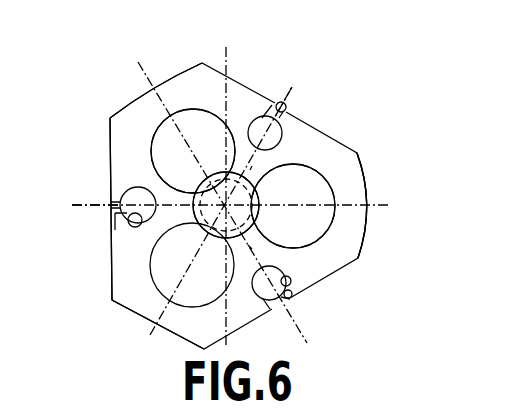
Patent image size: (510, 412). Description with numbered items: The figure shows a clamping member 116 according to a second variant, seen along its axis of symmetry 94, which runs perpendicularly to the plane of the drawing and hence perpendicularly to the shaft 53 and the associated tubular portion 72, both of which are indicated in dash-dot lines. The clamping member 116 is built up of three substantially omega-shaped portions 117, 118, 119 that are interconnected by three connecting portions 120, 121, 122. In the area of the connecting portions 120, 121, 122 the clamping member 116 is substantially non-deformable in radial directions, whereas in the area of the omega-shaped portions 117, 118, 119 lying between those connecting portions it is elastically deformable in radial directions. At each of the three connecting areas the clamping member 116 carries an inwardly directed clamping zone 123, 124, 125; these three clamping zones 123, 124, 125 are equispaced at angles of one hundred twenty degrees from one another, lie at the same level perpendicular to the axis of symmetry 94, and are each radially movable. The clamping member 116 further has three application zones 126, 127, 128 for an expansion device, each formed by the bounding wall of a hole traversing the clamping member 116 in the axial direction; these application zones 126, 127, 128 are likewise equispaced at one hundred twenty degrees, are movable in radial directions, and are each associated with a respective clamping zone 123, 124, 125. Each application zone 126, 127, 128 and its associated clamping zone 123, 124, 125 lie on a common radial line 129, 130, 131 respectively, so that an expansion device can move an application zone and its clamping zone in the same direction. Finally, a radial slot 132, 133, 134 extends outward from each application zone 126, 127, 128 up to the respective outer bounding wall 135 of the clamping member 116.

The clamping member 116 is at (316, 79).
The omega-shaped portion 117 is at (350, 191).
The omega-shaped portion 118 is at (150, 309).
The omega-shaped portion 119 is at (145, 108).
The connecting portion 120 is at (250, 247).
The connecting portion 121 is at (172, 216).
The connecting portion 122 is at (250, 167).
The clamping zone 123 is at (248, 240).
The clamping zone 124 is at (190, 218).
The clamping zone 125 is at (222, 163).
The application zone 126 is at (295, 296).
The application zone 127 is at (128, 222).
The application zone 128 is at (259, 113).
The radial line 129 is at (297, 322).
The radial line 130 is at (82, 203).
The radial line 131 is at (297, 83).
The radial slot 132 is at (272, 308).
The radial slot 133 is at (112, 202).
The radial slot 134 is at (286, 106).
The outer bounding wall 135 is at (368, 240).
The shaft 53 is at (226, 224).
The tubular portion 72 is at (206, 165).
The axis of symmetry 94 is at (255, 200).